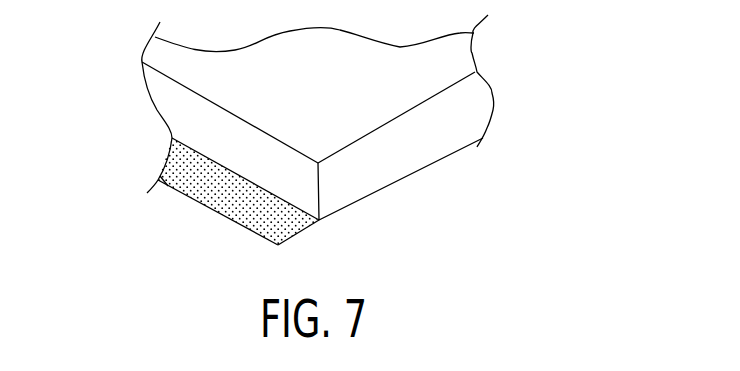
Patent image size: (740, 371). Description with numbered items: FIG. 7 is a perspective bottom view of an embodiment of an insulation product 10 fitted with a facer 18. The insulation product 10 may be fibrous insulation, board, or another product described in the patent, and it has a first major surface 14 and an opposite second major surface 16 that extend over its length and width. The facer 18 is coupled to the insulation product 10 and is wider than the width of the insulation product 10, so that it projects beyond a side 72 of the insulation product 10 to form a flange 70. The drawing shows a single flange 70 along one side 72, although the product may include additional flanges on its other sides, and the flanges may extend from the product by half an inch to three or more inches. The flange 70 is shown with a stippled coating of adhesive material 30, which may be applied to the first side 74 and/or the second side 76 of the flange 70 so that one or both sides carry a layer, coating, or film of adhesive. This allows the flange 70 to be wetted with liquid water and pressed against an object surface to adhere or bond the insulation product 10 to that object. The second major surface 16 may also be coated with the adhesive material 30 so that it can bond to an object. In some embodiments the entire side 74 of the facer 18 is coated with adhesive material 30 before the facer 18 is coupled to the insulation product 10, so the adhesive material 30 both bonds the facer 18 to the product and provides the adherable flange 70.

The insulation product 10 is at (495, 50).
The first major surface 14 is at (334, 90).
The second major surface 16 is at (392, 188).
The facer 18 is at (217, 213).
The adhesive material 30 is at (200, 188).
The flange 70 is at (187, 193).
The side 72 is at (177, 108).
The first side 74 is at (165, 162).
The second side 76 is at (302, 237).